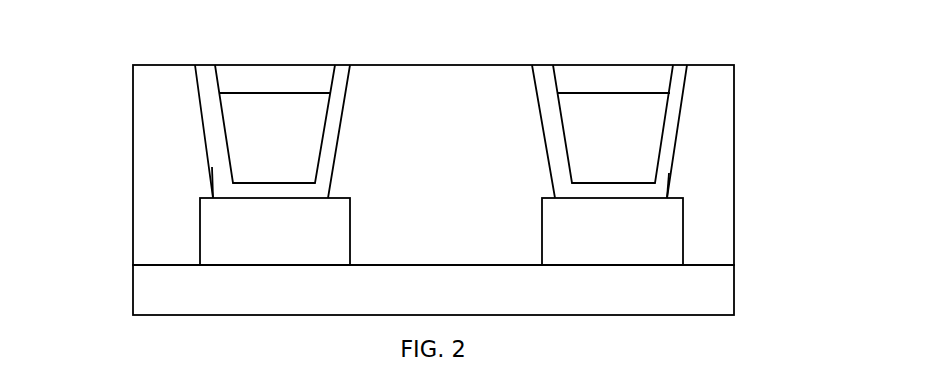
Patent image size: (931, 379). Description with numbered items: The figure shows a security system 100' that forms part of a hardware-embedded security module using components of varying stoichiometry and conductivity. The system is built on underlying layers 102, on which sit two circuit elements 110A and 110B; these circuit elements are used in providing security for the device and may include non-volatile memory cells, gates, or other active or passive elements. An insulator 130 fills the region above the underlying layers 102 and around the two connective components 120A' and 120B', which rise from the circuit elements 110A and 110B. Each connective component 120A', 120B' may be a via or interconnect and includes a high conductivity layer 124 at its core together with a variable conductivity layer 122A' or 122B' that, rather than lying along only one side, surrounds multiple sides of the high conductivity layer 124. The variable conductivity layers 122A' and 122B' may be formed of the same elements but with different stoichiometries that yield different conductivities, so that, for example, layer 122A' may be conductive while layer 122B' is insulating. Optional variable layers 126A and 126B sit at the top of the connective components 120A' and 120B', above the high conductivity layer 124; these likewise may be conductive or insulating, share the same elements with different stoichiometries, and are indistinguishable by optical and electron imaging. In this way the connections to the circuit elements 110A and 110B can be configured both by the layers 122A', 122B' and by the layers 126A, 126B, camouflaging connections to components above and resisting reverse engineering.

The security system 100' is at (433, 133).
The underlying layers 102 is at (433, 290).
The circuit element 110A is at (275, 231).
The circuit element 110B is at (612, 231).
The connective component 120A' is at (180, 132).
The connective component 120B' is at (698, 132).
The variable conductivity layer 122A' is at (135, 214).
The variable conductivity layer 122B' is at (737, 225).
The high conductivity layer 124 is at (444, 124).
The variable conductivity layer 126A is at (275, 82).
The variable conductivity layer 126B is at (613, 82).
The insulator 130 is at (433, 174).